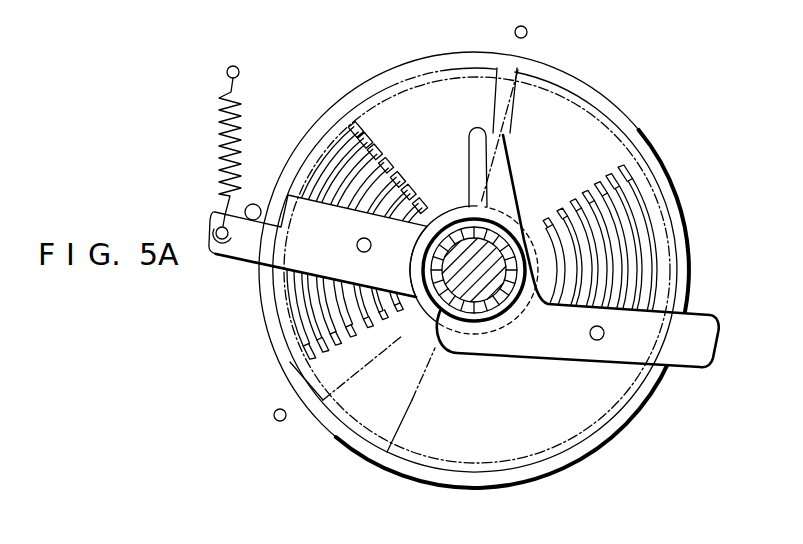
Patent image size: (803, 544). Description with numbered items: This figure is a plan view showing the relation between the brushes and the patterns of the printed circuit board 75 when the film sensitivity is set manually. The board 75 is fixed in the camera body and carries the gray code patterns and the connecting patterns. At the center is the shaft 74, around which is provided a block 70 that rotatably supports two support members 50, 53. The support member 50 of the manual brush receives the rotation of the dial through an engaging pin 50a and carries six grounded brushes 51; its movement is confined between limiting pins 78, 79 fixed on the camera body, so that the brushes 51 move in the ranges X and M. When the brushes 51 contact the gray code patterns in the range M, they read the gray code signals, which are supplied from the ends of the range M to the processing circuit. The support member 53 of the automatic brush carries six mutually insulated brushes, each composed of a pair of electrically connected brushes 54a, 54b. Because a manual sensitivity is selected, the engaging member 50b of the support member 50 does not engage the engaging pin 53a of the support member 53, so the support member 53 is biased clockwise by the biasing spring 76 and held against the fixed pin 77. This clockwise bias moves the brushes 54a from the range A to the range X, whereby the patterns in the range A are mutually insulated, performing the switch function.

The support member 50 is at (547, 348).
The engaging pin 50a is at (597, 341).
The engaging member 50b is at (478, 126).
The brushes 51 is at (629, 181).
The support member 53 is at (231, 248).
The engaging pin 53a is at (357, 244).
The brush 54a is at (418, 204).
The brush 54b is at (398, 308).
The block 70 is at (462, 336).
The shaft 74 is at (445, 272).
The printed circuit board 75 is at (646, 410).
The biasing spring 76 is at (238, 136).
The fixed pin 77 is at (262, 196).
The limiting pin 78 is at (526, 27).
The limiting pin 79 is at (274, 418).
The range A is at (285, 335).
The range X is at (394, 78).
The range M is at (541, 78).